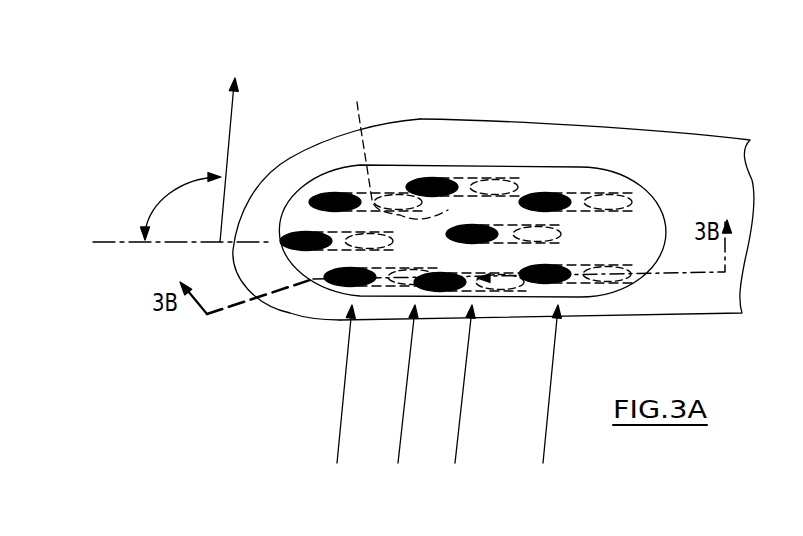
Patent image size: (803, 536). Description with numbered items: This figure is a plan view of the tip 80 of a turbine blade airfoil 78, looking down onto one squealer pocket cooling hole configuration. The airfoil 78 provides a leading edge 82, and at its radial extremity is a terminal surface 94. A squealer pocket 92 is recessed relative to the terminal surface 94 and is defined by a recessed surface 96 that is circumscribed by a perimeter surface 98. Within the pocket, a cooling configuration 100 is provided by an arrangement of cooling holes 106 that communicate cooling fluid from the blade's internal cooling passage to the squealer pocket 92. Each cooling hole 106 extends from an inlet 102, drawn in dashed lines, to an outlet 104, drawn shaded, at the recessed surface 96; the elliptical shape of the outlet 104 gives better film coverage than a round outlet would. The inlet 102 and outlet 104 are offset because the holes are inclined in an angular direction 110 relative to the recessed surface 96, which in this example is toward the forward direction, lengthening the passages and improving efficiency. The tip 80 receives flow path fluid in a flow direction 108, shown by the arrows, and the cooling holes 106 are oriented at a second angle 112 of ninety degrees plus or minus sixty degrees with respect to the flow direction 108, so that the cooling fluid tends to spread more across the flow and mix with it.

The airfoil 78 is at (629, 105).
The tip 80 is at (660, 142).
The leading edge 82 is at (231, 247).
The squealer pocket 92 is at (492, 157).
The terminal surface 94 is at (686, 160).
The recessed surface 96 is at (383, 183).
The perimeter surface 98 is at (538, 168).
The cooling configuration 100 is at (305, 86).
The inlet 102 is at (444, 211).
The outlet 104 is at (327, 192).
The cooling holes 106 is at (366, 96).
The flow direction 108 is at (341, 417).
The angular direction 110 is at (115, 243).
The second angle 112 is at (158, 203).